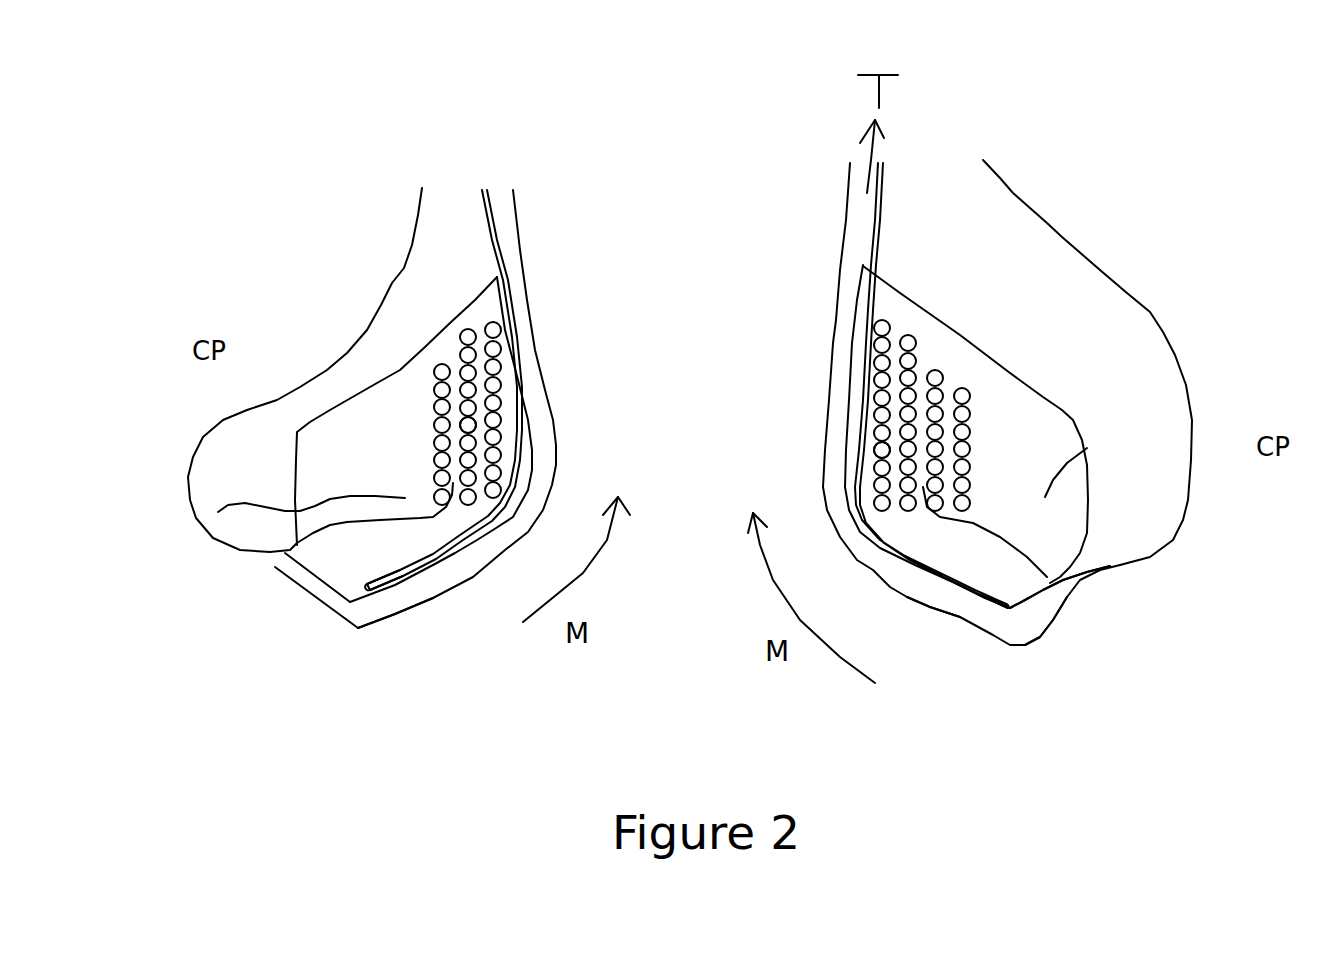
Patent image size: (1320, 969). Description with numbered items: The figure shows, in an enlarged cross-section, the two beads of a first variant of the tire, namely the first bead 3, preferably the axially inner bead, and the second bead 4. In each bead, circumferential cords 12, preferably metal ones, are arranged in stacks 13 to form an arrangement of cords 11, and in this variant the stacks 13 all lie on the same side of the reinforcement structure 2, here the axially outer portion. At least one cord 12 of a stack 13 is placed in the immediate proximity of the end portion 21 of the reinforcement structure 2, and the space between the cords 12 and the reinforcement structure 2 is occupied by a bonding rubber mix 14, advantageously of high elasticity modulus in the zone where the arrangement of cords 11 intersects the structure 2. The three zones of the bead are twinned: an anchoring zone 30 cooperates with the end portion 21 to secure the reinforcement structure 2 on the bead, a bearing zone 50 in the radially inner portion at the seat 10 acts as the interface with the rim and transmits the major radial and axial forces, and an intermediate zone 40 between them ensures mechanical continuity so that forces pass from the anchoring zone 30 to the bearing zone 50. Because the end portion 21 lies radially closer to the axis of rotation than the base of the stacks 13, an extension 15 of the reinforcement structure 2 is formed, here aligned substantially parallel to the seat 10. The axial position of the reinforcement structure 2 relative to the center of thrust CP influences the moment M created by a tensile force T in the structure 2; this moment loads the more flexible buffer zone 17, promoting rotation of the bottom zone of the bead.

The reinforcement structure 2 is at (739, 404).
The first bead 3 is at (316, 370).
The second bead 4 is at (1109, 362).
The seat 10 is at (659, 663).
The arrangement of cords 11 is at (685, 350).
The circumferential cords 12 is at (730, 436).
The stacks 13 is at (675, 419).
The bonding rubber mix 14 is at (692, 548).
The extension 15 is at (698, 669).
The buffer zone 17 is at (1131, 594).
The end portion 21 is at (686, 385).
The anchoring zone 30 is at (702, 415).
The intermediate zone 40 is at (668, 501).
The bearing zone 50 is at (778, 638).